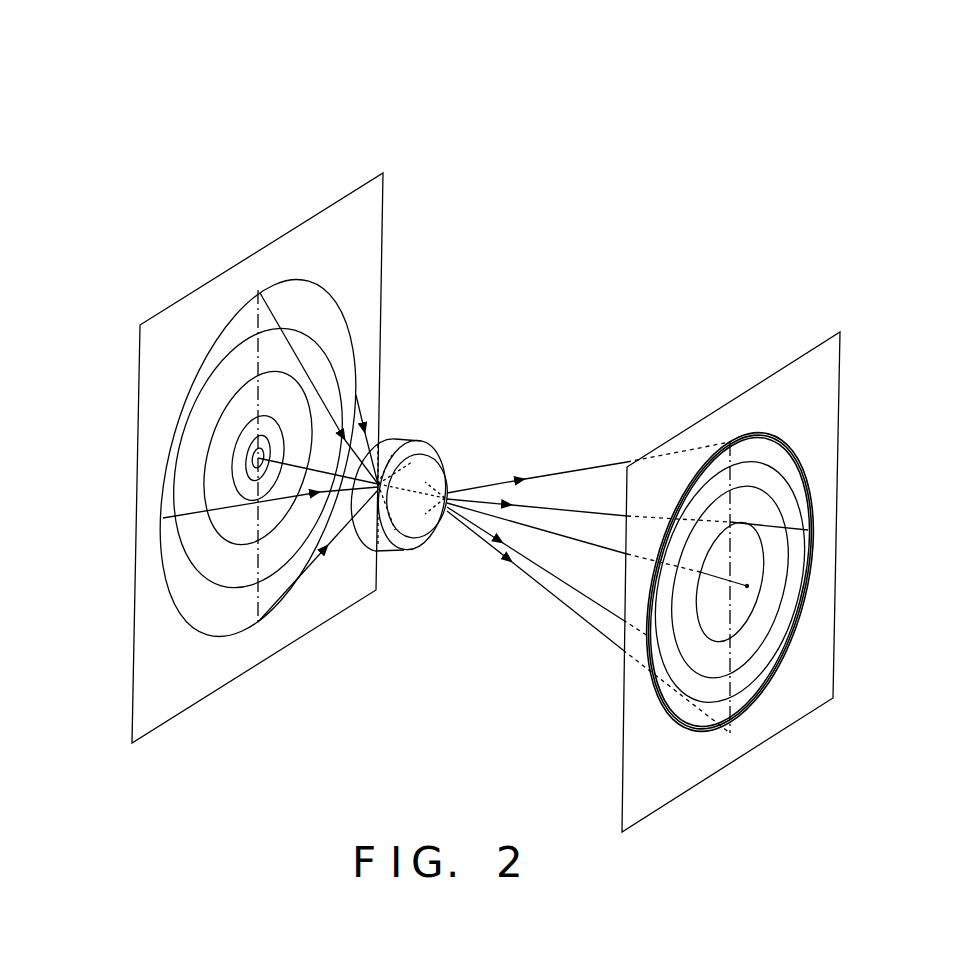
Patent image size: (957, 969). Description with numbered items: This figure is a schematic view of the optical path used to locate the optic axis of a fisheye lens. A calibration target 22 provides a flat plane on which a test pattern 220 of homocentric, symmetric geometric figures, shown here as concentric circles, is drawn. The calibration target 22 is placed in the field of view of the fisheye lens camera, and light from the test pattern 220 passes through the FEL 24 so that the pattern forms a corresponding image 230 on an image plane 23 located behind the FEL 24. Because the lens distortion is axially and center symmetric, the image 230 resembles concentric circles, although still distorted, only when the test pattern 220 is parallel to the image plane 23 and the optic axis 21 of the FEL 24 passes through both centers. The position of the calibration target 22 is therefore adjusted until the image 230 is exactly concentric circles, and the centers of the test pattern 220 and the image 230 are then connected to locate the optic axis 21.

The calibration target 22 is at (322, 207).
The test pattern 220 is at (213, 343).
The FEL 24 is at (410, 437).
The image plane 23 is at (827, 338).
The image 230 is at (767, 432).
The optic axis 21 is at (748, 590).